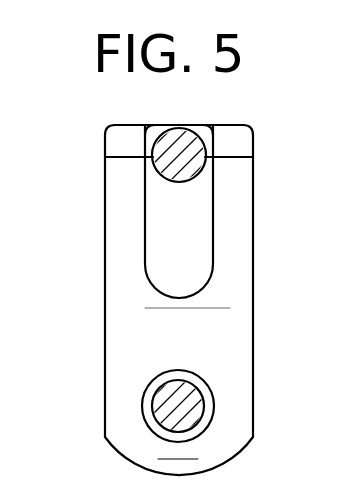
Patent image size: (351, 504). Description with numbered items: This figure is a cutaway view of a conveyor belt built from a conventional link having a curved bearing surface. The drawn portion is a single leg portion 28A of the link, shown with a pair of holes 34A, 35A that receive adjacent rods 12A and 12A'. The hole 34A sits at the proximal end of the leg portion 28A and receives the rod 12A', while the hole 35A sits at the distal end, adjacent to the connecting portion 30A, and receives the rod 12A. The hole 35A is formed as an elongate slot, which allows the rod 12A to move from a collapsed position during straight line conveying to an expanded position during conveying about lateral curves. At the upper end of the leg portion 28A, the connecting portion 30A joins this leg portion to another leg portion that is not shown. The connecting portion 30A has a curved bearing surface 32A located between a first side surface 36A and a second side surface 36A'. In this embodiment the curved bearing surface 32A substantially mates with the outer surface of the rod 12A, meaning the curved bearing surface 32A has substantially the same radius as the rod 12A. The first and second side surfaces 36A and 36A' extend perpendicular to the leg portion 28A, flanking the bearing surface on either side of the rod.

The rod 12A is at (147, 181).
The rod 12A' is at (146, 405).
The leg portion 28A is at (123, 333).
The connecting portion 30A is at (158, 129).
The curved bearing surface 32A is at (196, 150).
The hole 34A is at (215, 406).
The hole 35A is at (212, 278).
The first side surface 36A is at (95, 172).
The second side surface 36A' is at (269, 176).